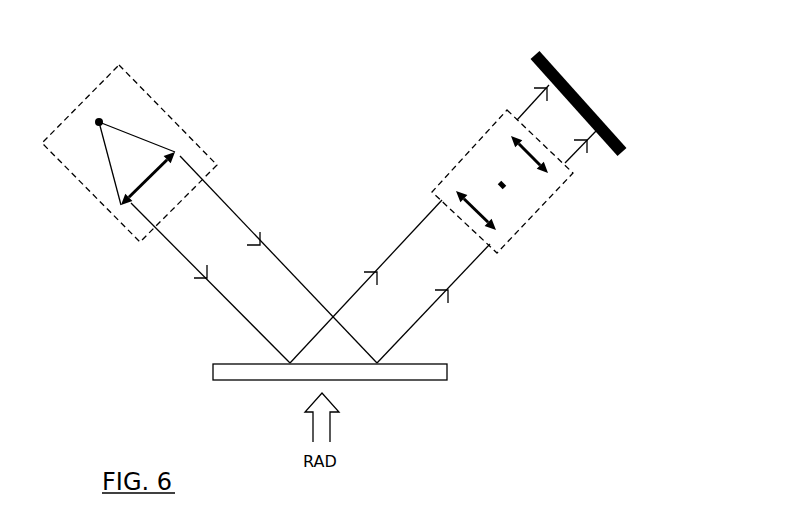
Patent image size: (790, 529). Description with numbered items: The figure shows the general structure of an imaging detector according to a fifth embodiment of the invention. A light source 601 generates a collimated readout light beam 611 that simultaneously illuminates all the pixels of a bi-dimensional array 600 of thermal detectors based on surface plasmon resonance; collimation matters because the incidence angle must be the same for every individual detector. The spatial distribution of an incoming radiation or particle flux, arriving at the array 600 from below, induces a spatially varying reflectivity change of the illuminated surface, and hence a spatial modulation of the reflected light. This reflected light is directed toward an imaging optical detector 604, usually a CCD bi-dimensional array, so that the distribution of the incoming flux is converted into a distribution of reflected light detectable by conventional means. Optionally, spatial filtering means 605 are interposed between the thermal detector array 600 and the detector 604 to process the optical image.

The bi-dimensional array of thermal detectors 600 is at (433, 380).
The light source 601 is at (98, 201).
The imaging optical detector 604 is at (628, 142).
The spatial filtering means 605 is at (542, 207).
The radiation beam 611 is at (287, 268).